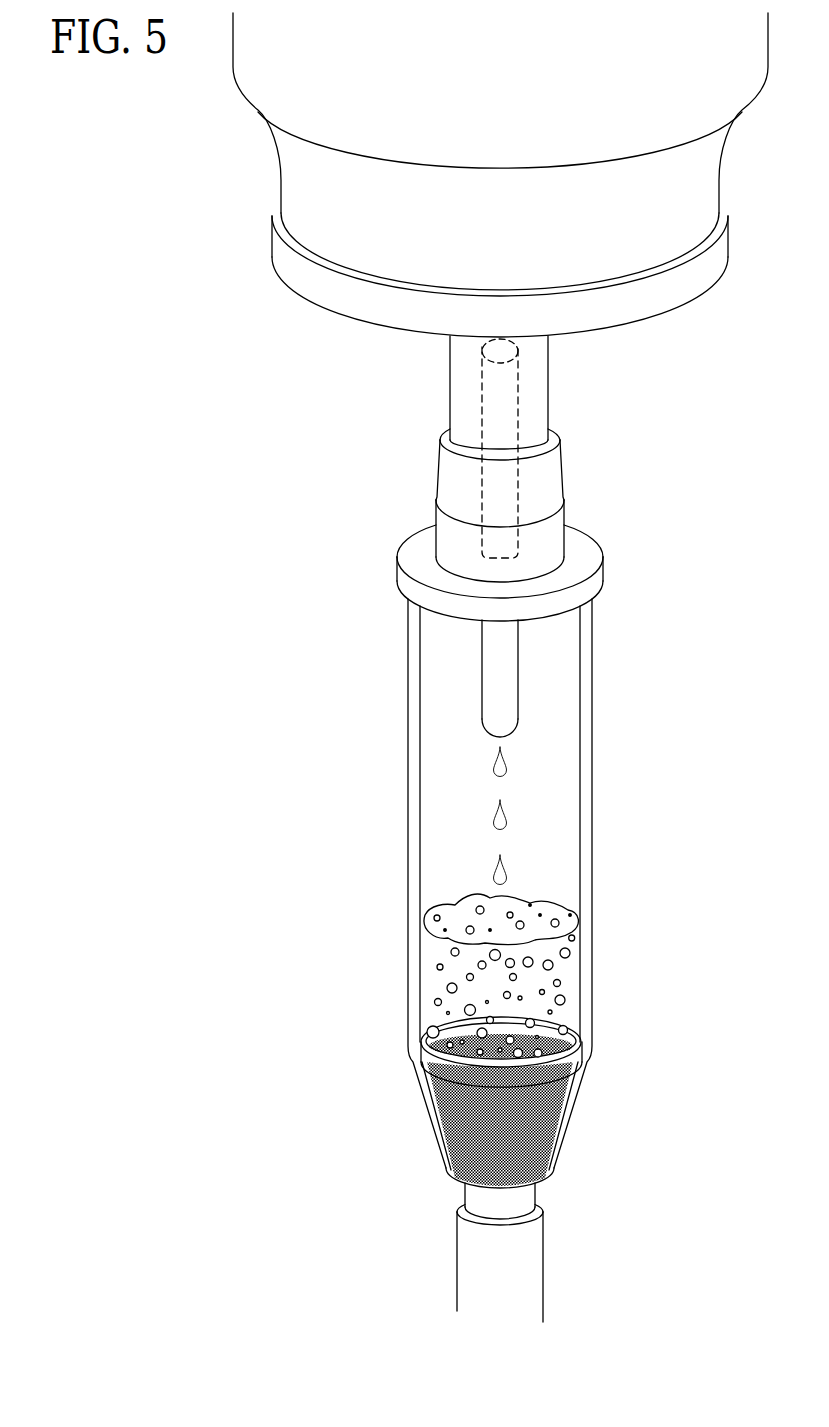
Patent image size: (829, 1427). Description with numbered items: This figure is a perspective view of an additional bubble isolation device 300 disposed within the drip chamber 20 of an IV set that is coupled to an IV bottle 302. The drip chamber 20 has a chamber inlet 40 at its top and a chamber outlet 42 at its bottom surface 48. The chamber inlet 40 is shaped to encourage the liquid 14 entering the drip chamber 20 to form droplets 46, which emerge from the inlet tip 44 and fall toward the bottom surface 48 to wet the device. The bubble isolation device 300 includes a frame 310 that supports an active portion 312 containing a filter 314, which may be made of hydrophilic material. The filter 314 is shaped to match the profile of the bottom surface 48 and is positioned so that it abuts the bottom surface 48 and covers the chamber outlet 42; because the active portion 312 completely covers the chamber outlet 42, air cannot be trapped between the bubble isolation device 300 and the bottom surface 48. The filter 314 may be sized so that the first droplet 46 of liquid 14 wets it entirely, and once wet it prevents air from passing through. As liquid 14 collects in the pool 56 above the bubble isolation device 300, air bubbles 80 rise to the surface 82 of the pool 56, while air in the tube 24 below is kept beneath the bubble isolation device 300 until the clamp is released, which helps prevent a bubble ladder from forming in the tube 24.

The IV bottle 302 is at (320, 173).
The drip chamber 20 is at (390, 558).
The liquid 14 is at (432, 978).
The chamber inlet 40 is at (500, 655).
The nozzle outlet 44 is at (508, 732).
The droplets 46 is at (496, 883).
The pool 56 is at (556, 906).
The surface 82 is at (460, 907).
The air bubbles 80 is at (570, 952).
The bubble isolation device 300 is at (590, 1039).
The frame 310 is at (543, 1032).
The filter 314 is at (455, 1100).
The active portion 312 is at (543, 1140).
The bottom surface 48 is at (460, 1190).
The chamber outlet 42 is at (518, 1203).
The tube 24 is at (530, 1298).